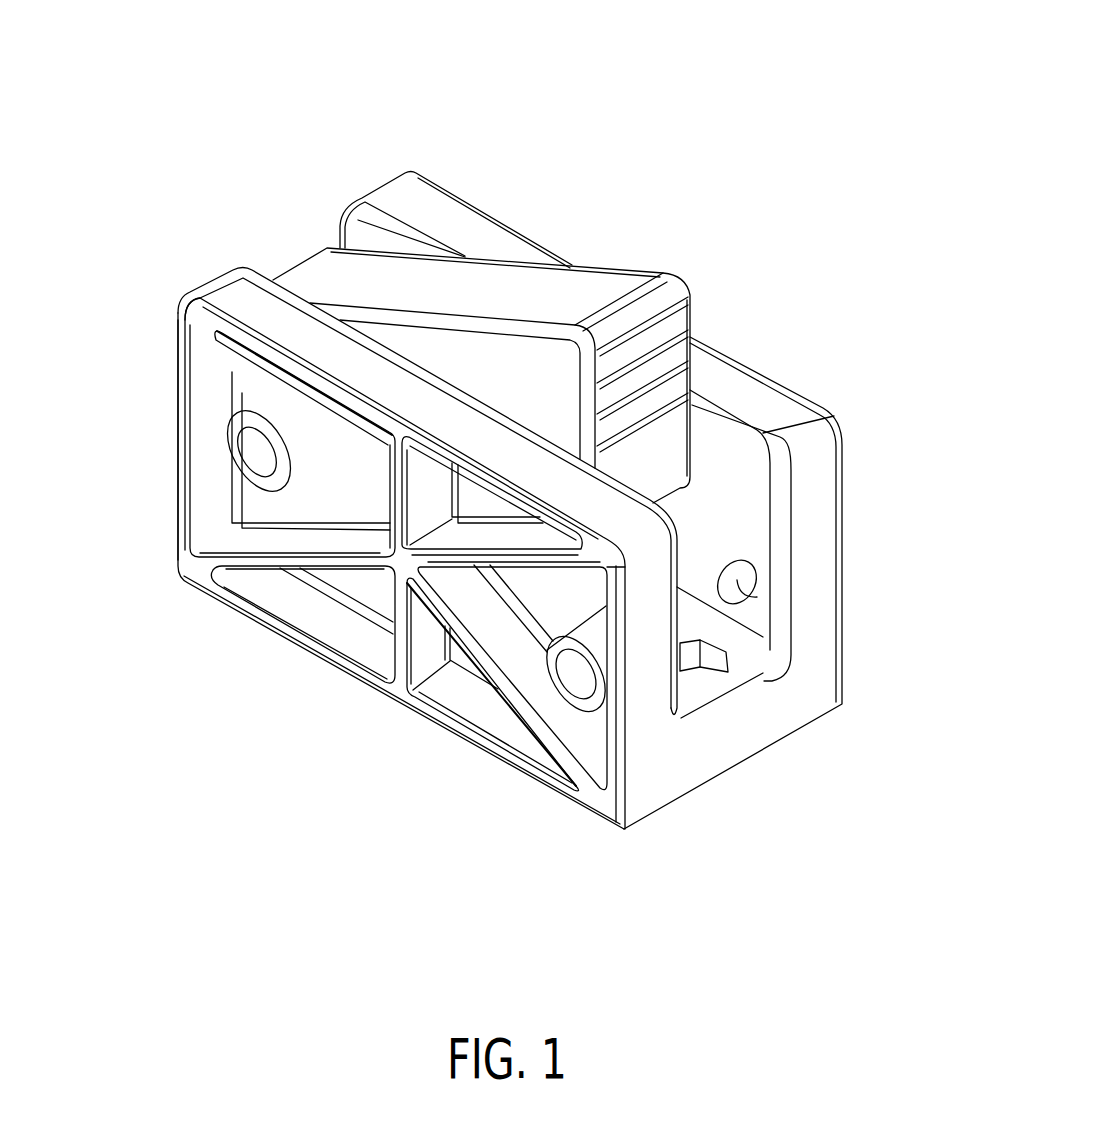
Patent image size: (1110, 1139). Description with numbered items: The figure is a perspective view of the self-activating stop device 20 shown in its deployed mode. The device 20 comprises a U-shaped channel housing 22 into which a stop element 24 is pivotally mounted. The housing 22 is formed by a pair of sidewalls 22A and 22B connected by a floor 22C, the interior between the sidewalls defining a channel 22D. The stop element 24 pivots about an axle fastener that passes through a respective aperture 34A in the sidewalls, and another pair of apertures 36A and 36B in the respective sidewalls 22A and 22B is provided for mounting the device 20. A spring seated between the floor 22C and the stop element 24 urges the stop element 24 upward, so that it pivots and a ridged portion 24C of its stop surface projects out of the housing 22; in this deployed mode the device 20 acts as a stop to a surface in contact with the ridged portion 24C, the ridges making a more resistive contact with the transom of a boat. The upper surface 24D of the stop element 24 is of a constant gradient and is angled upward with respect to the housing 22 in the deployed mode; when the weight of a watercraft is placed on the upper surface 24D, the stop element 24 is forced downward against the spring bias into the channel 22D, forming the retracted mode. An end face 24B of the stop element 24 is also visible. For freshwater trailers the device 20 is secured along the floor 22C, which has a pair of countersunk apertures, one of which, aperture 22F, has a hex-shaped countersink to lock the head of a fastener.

The self-activating stop device 20 is at (399, 786).
The U-shaped channel housing 22 is at (799, 372).
The sidewall 22A is at (178, 412).
The sidewall 22B is at (415, 203).
The floor 22C is at (733, 740).
The channel 22D is at (745, 535).
The countersunk aperture 22F is at (708, 646).
The stop element 24 is at (681, 160).
The insert end face 24B is at (660, 457).
The ridged portion of stop surface 24C is at (658, 340).
The upper surface 24D is at (559, 300).
The aperture 34A is at (261, 453).
The aperture 36A is at (572, 676).
The aperture 36B is at (737, 583).